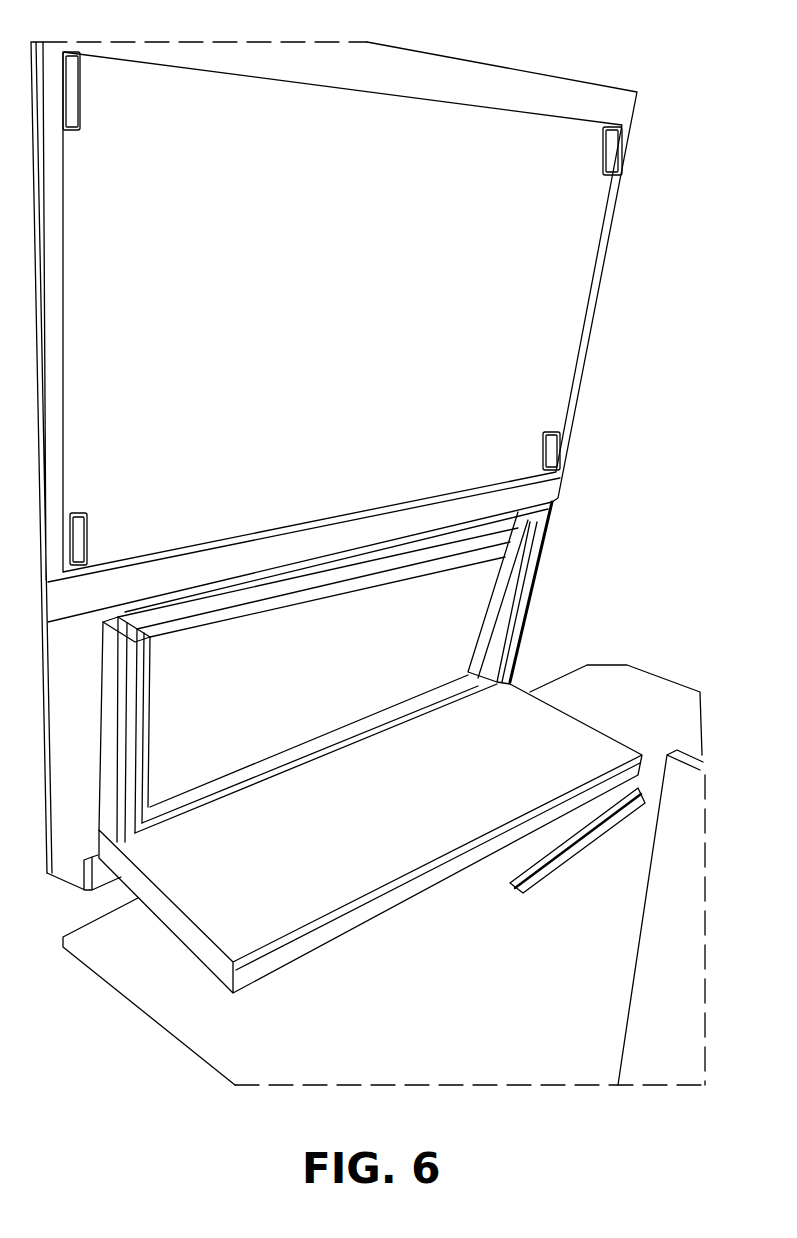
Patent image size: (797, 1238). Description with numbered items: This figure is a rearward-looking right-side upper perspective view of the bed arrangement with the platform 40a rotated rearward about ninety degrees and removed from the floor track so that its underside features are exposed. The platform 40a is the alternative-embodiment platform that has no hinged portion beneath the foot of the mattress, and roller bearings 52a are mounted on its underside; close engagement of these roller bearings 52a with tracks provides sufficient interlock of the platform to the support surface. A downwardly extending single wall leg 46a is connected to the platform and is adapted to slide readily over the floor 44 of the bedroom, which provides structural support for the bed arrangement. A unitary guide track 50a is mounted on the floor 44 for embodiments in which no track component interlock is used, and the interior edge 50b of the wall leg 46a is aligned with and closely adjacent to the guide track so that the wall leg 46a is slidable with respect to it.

The platform 40a is at (333, 357).
The roller bearings 52a is at (612, 148).
The wall leg 46a is at (394, 825).
The floor 44 is at (414, 1024).
The unitary guide track 50a is at (587, 841).
The interior edge of wall leg 50b is at (362, 901).